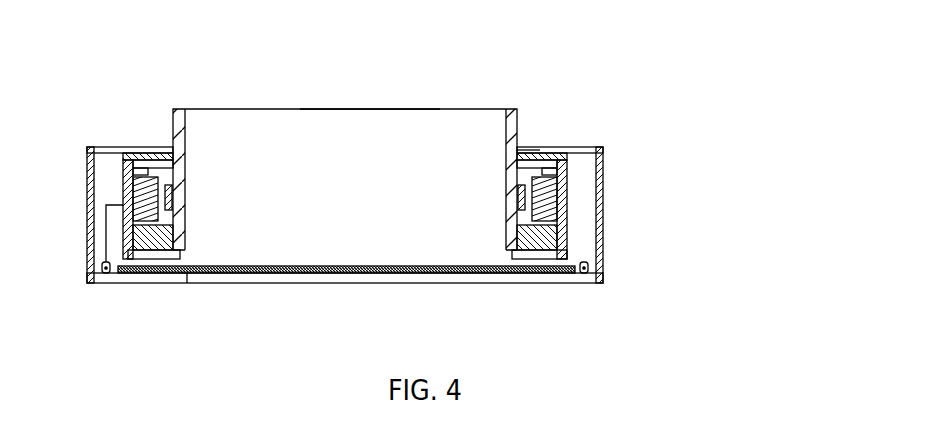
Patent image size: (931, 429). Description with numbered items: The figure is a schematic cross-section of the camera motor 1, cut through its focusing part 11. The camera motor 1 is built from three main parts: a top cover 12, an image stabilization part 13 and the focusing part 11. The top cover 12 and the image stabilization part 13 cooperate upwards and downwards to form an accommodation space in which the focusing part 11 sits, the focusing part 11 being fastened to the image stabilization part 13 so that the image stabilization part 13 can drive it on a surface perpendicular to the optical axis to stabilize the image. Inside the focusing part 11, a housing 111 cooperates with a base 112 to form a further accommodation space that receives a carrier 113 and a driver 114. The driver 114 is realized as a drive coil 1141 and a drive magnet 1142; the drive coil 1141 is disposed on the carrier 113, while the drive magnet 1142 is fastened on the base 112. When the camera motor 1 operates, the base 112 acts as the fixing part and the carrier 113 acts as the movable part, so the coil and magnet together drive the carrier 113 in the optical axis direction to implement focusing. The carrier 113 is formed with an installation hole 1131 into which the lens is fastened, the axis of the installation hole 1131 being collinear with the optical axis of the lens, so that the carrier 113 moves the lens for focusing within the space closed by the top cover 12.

The camera motor 1 is at (89, 41).
The focusing part 11 is at (741, 117).
The housing 111 is at (540, 241).
The base 112 is at (565, 243).
The carrier 113 is at (580, 157).
The installation hole 1131 is at (353, 120).
The driver 114 is at (675, 167).
The drive coil 1141 is at (526, 194).
The drive magnet 1142 is at (534, 202).
The top cover 12 is at (552, 151).
The image stabilization part 13 is at (563, 280).